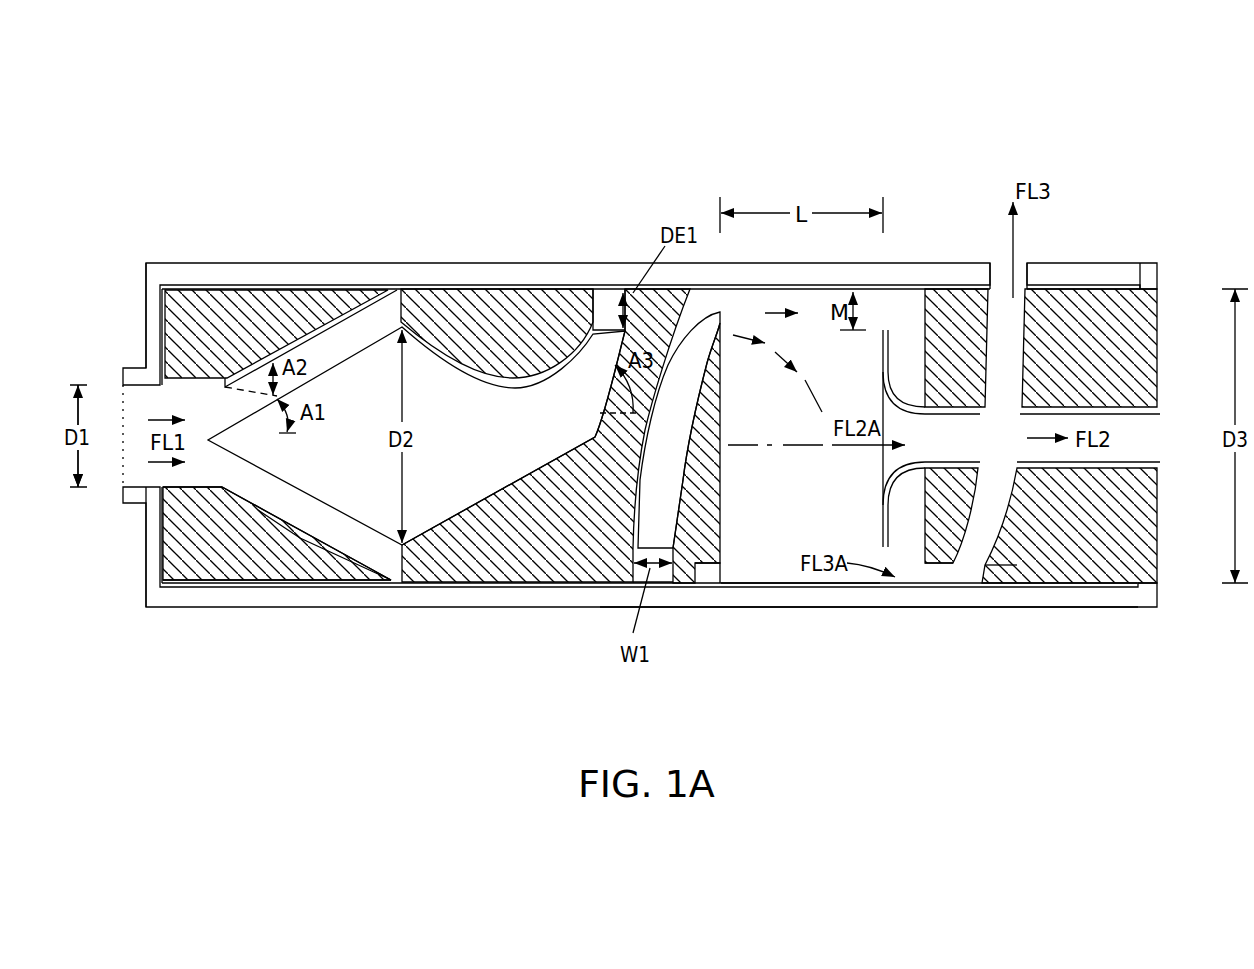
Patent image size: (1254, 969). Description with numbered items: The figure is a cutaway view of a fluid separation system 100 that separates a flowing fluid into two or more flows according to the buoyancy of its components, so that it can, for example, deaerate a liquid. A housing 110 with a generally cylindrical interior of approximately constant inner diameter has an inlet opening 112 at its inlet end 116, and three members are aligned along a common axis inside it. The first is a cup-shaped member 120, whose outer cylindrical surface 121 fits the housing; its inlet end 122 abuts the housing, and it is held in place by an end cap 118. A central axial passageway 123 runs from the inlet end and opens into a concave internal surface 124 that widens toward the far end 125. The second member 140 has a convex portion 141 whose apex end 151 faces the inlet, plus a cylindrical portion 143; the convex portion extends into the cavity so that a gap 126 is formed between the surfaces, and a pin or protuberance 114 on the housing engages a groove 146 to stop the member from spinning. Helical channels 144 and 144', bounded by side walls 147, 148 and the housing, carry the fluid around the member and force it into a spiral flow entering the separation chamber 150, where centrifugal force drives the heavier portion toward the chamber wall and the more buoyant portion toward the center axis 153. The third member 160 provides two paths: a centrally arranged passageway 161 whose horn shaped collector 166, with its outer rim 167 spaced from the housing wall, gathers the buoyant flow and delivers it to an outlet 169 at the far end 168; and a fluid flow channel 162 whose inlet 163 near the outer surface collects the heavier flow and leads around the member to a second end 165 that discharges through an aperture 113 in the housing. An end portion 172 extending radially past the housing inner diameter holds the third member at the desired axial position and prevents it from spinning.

The fluid separation system 100 is at (779, 106).
The housing 110 is at (500, 275).
The inlet opening 112 is at (137, 403).
The aperture 113 is at (994, 272).
The pin or protuberance 114 is at (710, 585).
The inlet end 116 is at (130, 585).
The end cap 118 is at (146, 300).
The cup-shaped member 120 is at (255, 568).
The outer cylindrical surface 121 is at (207, 585).
The inlet end 122 is at (163, 487).
The central axial passageway 123 is at (203, 400).
The concave internal surface 124 is at (350, 330).
The far end 125 is at (392, 582).
The gap 126 is at (310, 350).
The second member 140 is at (598, 568).
The convex portion 141 is at (338, 517).
The cylindrical portion 143 is at (447, 297).
The helical channel 144 is at (616, 276).
The helical channel 144' is at (672, 623).
The groove 146 is at (727, 563).
The side wall 147 is at (723, 306).
The side wall 148 is at (721, 332).
The separation chamber 150 is at (793, 575).
The apex end 151 is at (203, 483).
The center axis 153 is at (755, 448).
The third member 160 is at (1047, 567).
The centrally arranged passageway 161 is at (972, 453).
The fluid flow channel 162 is at (975, 555).
The inlet 163 is at (937, 577).
The second end 165 is at (1027, 292).
The horn shaped collector 166 is at (882, 463).
The outer rim 167 is at (884, 330).
The far end 168 is at (1162, 580).
The outlet 169 is at (1162, 428).
The end portion 172 is at (1150, 263).